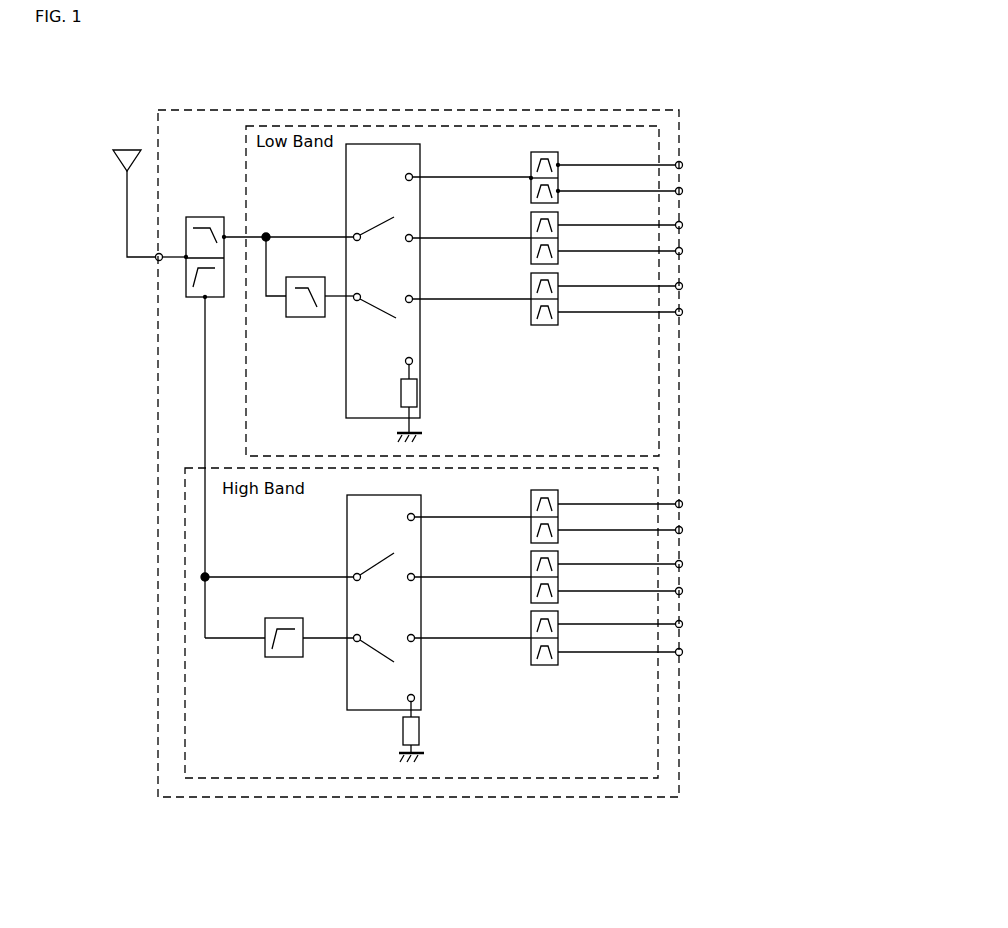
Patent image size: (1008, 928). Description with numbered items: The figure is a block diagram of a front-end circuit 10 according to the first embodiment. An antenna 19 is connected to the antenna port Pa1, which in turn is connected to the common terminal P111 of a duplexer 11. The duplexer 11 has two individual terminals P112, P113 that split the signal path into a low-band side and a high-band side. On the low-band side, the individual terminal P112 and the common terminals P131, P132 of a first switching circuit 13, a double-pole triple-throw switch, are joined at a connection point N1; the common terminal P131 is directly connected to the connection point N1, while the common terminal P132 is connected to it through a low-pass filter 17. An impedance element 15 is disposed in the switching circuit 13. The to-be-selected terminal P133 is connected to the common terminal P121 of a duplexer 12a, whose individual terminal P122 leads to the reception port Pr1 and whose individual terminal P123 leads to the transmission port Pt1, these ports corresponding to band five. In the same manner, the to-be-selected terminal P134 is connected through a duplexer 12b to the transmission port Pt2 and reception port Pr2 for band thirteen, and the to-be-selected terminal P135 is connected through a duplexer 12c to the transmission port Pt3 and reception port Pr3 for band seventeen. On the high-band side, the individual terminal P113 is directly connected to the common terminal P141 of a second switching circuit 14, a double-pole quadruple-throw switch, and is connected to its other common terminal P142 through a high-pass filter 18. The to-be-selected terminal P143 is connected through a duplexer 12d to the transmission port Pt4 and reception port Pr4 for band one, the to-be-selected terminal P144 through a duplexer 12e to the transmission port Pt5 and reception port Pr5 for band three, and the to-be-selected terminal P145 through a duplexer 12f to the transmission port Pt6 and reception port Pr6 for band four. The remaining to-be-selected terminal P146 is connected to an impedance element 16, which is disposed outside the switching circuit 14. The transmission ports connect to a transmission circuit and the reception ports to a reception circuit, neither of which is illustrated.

The front-end circuit 10 is at (540, 110).
The duplexer 11 is at (205, 217).
The duplexer 12a is at (551, 152).
The duplexer 12b is at (557, 214).
The duplexer 12c is at (557, 274).
The duplexer 12d is at (558, 493).
The duplexer 12e is at (558, 555).
The duplexer 12f is at (558, 615).
The switching circuit 13 is at (394, 143).
The switching circuit 14 is at (347, 521).
The impedance element 15 is at (419, 393).
The impedance element 16 is at (420, 728).
The low-pass filter 17 is at (287, 317).
The high-pass filter 18 is at (267, 658).
The antenna 19 is at (124, 148).
The connection point N1 is at (263, 242).
The antenna port Pa1 is at (156, 259).
The common terminal P111 is at (186, 258).
The individual terminal P112 is at (228, 236).
The individual terminal P113 is at (203, 299).
The common terminal P121 is at (530, 176).
The individual terminal P122 is at (558, 165).
The individual terminal P123 is at (558, 191).
The common terminal P131 is at (352, 233).
The common terminal P132 is at (356, 301).
The to-be-selected terminal P133 is at (413, 175).
The to-be-selected terminal P134 is at (413, 237).
The to-be-selected terminal P135 is at (413, 297).
The common terminal P141 is at (355, 574).
The common terminal P142 is at (356, 644).
The to-be-selected terminal P143 is at (415, 515).
The to-be-selected terminal P144 is at (415, 576).
The to-be-selected terminal P145 is at (415, 637).
The to-be-selected terminal P146 is at (415, 697).
The reception port Pr1 is at (682, 165).
The transmission port Pt1 is at (681, 191).
The reception port Pr2 is at (687, 225).
The transmission port Pt2 is at (686, 251).
The reception port Pr3 is at (687, 286).
The transmission port Pt3 is at (686, 312).
The reception port Pr4 is at (682, 504).
The transmission port Pt4 is at (681, 530).
The reception port Pr5 is at (682, 564).
The transmission port Pt5 is at (681, 591).
The reception port Pr6 is at (682, 624).
The transmission port Pt6 is at (681, 652).